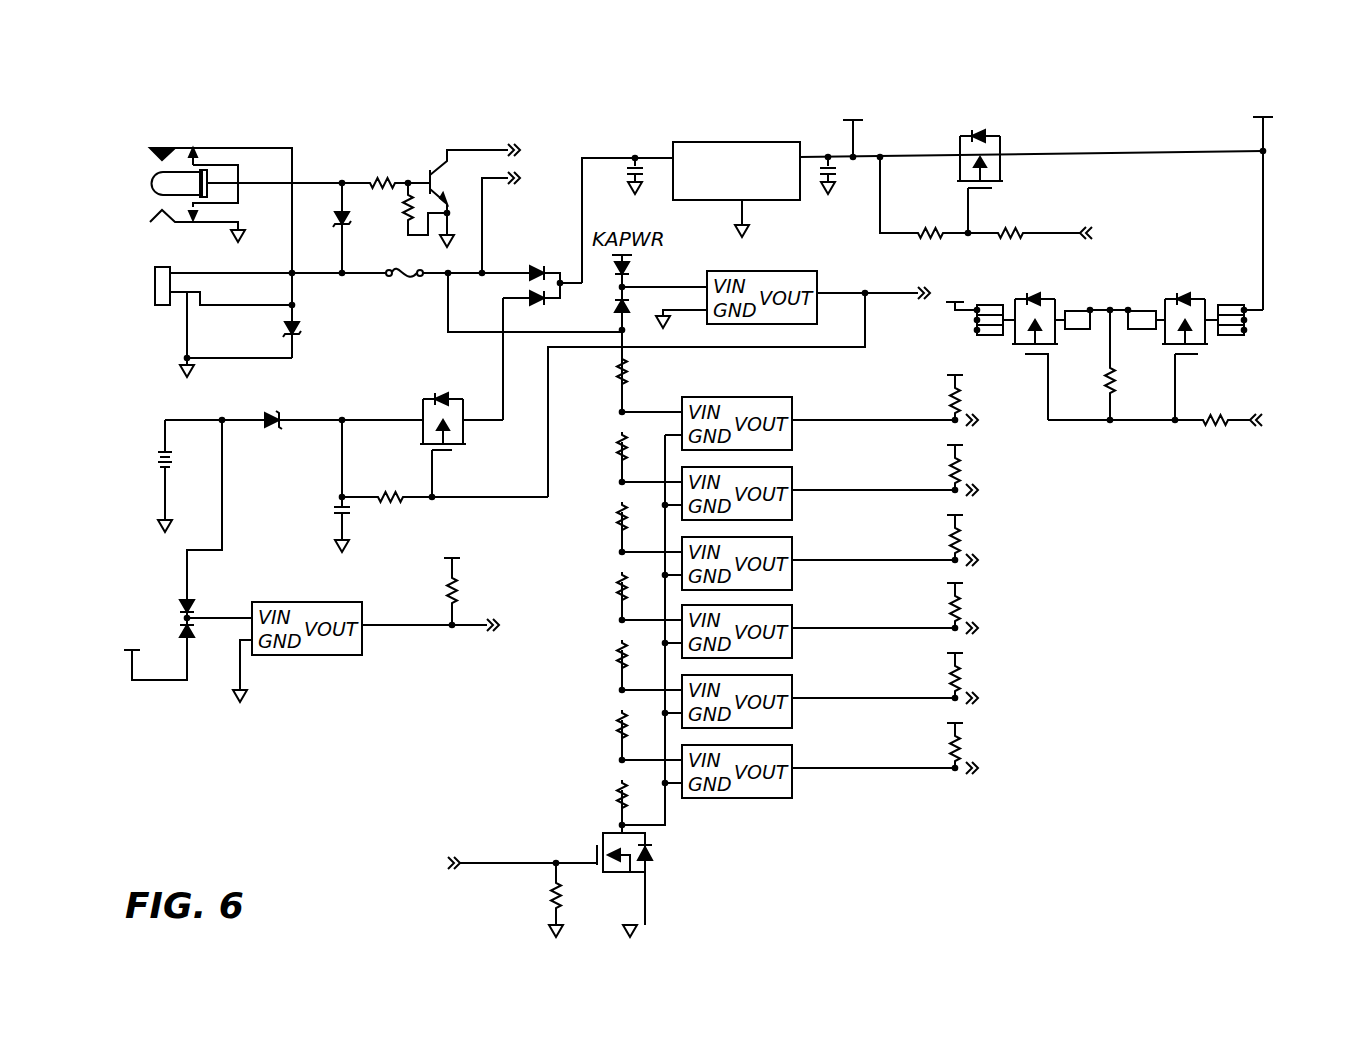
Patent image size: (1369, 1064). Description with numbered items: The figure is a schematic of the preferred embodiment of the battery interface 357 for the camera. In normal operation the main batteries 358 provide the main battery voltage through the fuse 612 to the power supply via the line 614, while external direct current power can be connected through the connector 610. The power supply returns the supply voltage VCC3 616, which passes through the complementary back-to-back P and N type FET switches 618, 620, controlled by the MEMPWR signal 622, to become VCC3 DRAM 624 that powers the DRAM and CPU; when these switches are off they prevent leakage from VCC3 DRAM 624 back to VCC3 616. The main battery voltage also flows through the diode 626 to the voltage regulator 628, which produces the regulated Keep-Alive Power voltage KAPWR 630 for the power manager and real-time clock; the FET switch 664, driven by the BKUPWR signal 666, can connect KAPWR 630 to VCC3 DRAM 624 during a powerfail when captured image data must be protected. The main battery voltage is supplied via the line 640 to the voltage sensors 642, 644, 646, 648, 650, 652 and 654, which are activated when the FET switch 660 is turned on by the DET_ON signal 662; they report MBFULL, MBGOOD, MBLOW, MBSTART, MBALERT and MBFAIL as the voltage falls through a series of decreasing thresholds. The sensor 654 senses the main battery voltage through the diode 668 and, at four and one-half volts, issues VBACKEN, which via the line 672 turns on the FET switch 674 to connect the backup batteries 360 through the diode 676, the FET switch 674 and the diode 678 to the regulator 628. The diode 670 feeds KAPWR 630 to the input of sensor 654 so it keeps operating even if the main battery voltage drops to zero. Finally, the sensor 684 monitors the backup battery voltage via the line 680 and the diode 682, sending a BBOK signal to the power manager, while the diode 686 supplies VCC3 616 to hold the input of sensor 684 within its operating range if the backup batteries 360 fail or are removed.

The battery interface 357 is at (1200, 668).
The main batteries 358 is at (155, 289).
The backup batteries 360 is at (158, 481).
The connector 610 is at (153, 183).
The fuse 612 is at (392, 277).
The line 614 is at (498, 186).
The voltage VCC3 616 is at (993, 279).
The FET switch 618 is at (1027, 353).
The FET switch 620 is at (1205, 348).
The MEMPWR signal 622 is at (1243, 428).
The VCC3 DRAM 624 is at (1258, 120).
The diode 626 is at (547, 266).
The voltage regulator 628 is at (758, 200).
The Keep-Alive Power voltage (KAPWR) 630 is at (614, 222).
The line 640 is at (448, 332).
The voltage sensor 642 is at (793, 783).
The voltage sensor 644 is at (793, 713).
The voltage sensor 646 is at (793, 643).
The voltage sensor 648 is at (793, 575).
The voltage sensor 650 is at (793, 505).
The voltage sensor 652 is at (793, 435).
The voltage sensor 654 is at (770, 271).
The FET switch 660 is at (652, 858).
The DET_ON signal 662 is at (398, 856).
The FET switch 664 is at (1002, 162).
The BKUPWR signal 666 is at (1130, 246).
The diode 668 is at (632, 306).
The diode 670 is at (632, 271).
The line 672 is at (522, 501).
The FET switch 674 is at (465, 441).
The diode 676 is at (276, 412).
The diode 678 is at (540, 306).
The line 680 is at (222, 505).
The diode 682 is at (183, 597).
The sensor 684 is at (362, 638).
The diode 686 is at (192, 636).